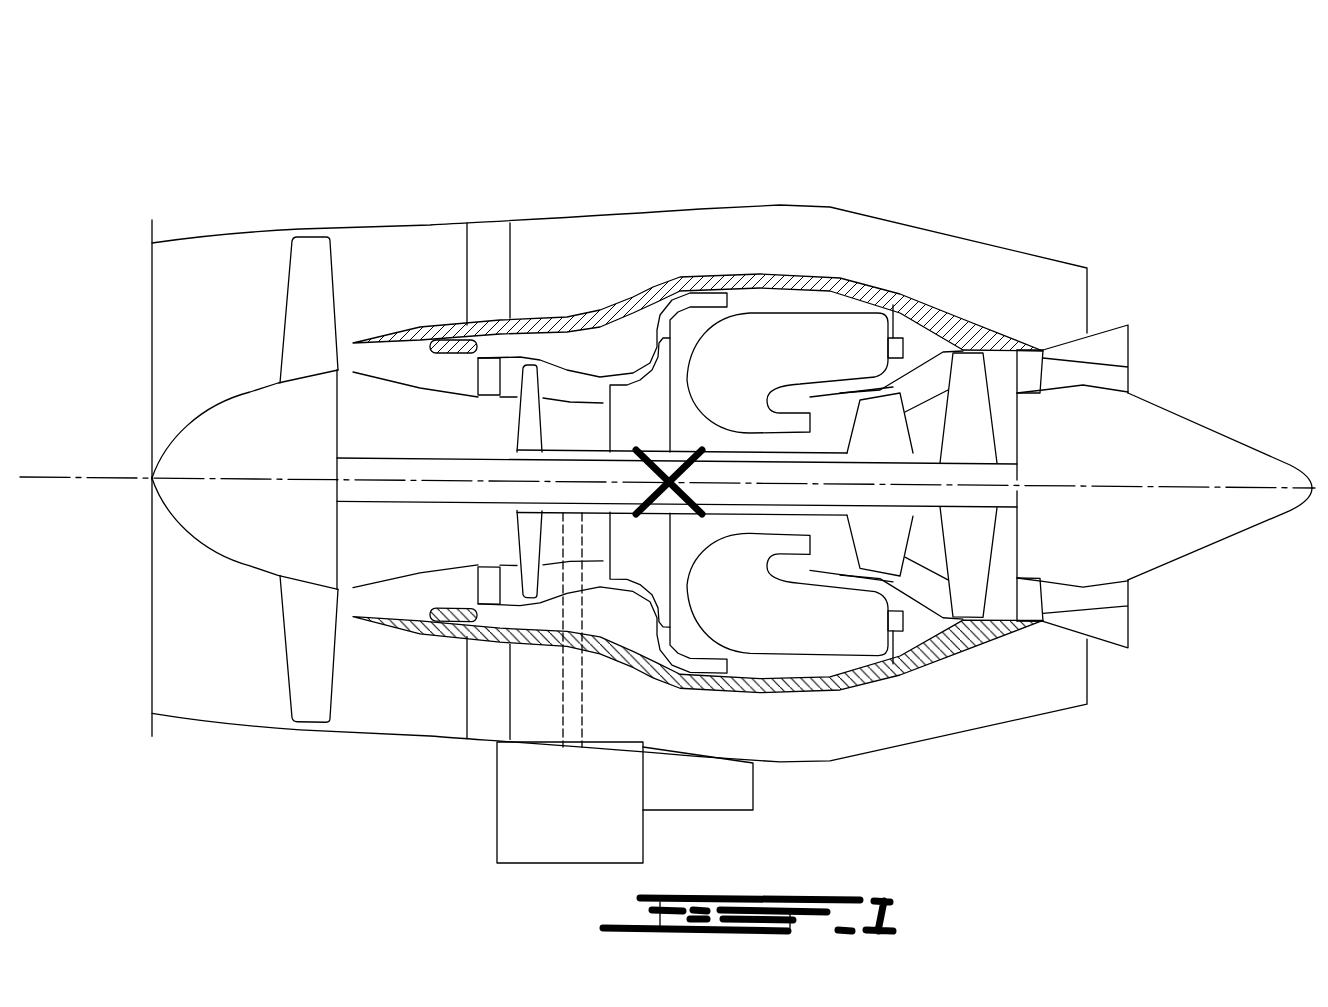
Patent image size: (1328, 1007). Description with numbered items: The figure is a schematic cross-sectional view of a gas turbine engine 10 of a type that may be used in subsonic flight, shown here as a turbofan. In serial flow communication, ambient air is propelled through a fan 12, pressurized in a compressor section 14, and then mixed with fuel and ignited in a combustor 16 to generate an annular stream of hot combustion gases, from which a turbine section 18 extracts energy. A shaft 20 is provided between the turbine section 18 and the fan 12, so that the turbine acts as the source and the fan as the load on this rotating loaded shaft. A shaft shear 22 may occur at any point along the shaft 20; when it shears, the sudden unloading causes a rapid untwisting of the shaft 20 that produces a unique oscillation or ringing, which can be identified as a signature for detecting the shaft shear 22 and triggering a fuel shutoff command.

The gas turbine engine 10 is at (946, 160).
The fan 12 is at (305, 637).
The compressor section 14 is at (567, 378).
The combustor 16 is at (790, 335).
The turbine section 18 is at (925, 553).
The shaft 20 is at (467, 503).
The shaft shear 22 is at (640, 480).